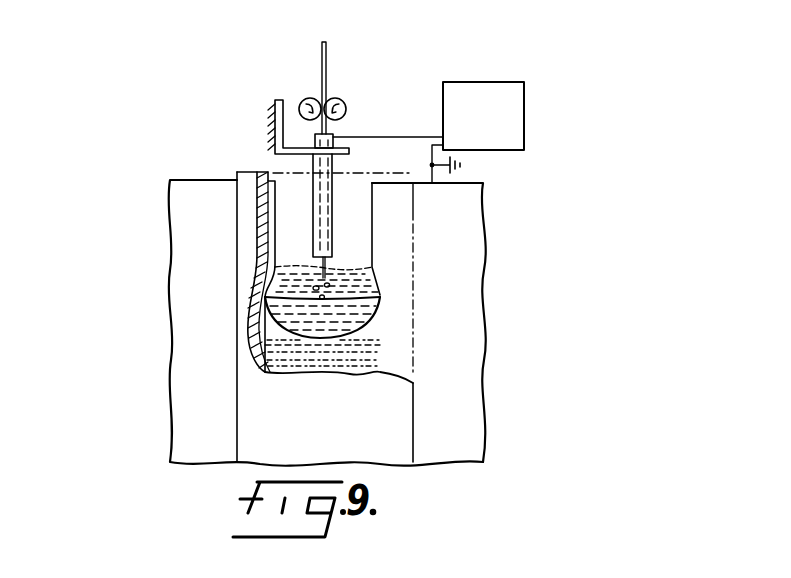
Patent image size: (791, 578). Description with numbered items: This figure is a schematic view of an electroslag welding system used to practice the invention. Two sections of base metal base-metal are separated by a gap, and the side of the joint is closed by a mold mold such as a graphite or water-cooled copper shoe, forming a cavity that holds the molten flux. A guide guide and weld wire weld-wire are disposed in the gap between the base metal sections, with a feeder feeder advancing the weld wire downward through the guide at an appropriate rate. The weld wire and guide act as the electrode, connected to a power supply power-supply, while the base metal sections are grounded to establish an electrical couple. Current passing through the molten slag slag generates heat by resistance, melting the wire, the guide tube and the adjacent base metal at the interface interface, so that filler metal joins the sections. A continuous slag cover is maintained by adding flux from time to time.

The base metal base-metal is at (178, 198).
The element mold is at (250, 385).
The weld wire weld-wire is at (322, 42).
The element feeder is at (333, 100).
The guide tube guide is at (313, 164).
The power supply power-supply is at (428, 132).
The element slag is at (367, 278).
The element interface is at (263, 345).